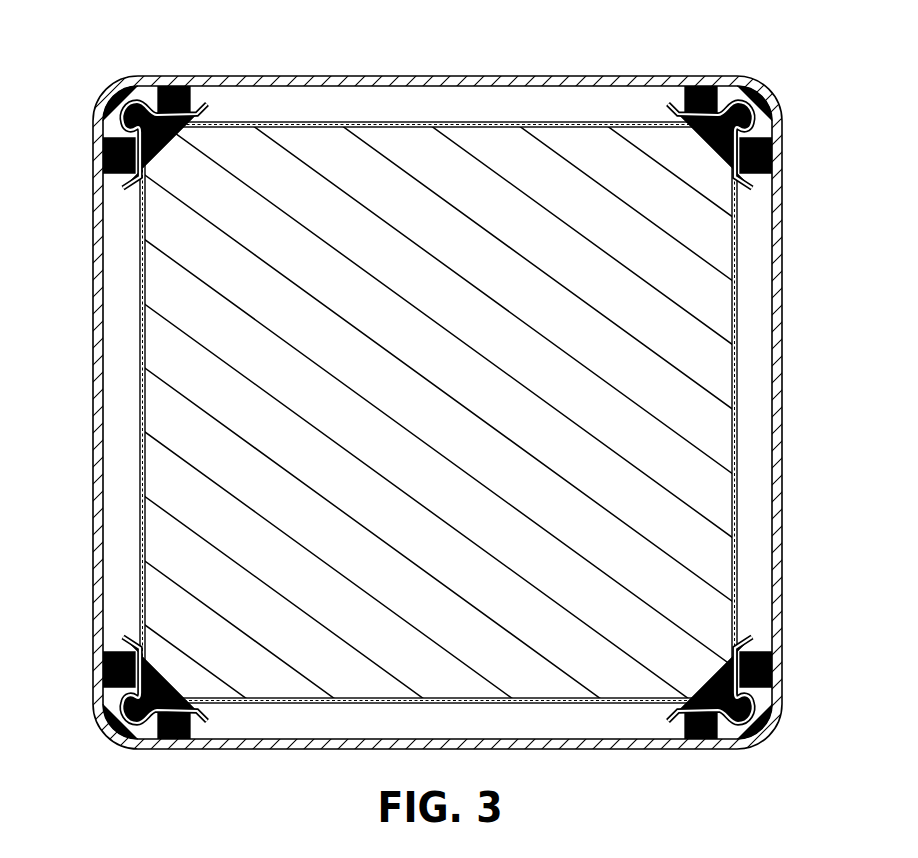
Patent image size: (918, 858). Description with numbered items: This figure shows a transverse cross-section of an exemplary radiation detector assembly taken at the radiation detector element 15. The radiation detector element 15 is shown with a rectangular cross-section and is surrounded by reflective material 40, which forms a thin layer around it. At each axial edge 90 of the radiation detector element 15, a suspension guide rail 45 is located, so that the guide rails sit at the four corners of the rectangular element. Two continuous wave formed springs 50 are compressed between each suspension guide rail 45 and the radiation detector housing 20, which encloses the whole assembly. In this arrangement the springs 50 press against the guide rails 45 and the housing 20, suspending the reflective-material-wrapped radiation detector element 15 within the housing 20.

The radiation detector element 15 is at (567, 157).
The radiation detector housing 20 is at (326, 78).
The reflective material 40 is at (452, 124).
The suspension guide rail 45 is at (130, 104).
The continuous wave formed spring 50 is at (177, 88).
The axial edge 90 is at (137, 106).